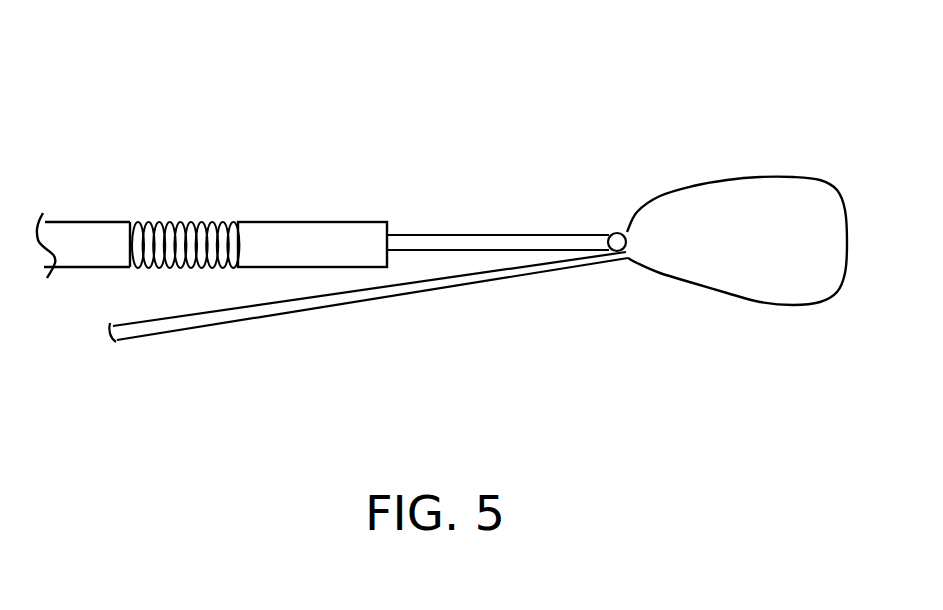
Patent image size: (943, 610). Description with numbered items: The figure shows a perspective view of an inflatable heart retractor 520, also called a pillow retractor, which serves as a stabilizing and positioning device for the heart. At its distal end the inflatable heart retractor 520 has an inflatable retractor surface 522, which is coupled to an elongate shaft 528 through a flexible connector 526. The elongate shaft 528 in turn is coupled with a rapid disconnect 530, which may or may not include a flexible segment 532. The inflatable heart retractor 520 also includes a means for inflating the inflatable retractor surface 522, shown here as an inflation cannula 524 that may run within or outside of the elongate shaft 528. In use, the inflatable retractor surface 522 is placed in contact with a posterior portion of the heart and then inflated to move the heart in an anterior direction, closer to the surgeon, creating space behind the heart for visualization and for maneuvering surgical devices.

The inflatable heart retractor 520 is at (548, 93).
The inflatable retractor surface 522 is at (775, 177).
The inflation cannula 524 is at (547, 274).
The flexible connector 526 is at (616, 231).
The elongate shaft 528 is at (435, 235).
The rapid disconnect 530 is at (87, 222).
The flexible segment 532 is at (183, 222).